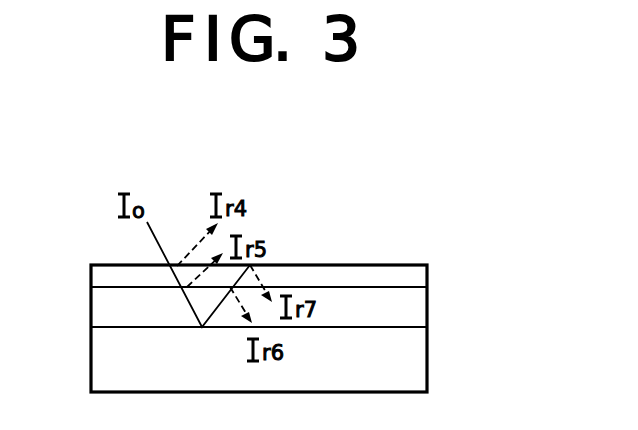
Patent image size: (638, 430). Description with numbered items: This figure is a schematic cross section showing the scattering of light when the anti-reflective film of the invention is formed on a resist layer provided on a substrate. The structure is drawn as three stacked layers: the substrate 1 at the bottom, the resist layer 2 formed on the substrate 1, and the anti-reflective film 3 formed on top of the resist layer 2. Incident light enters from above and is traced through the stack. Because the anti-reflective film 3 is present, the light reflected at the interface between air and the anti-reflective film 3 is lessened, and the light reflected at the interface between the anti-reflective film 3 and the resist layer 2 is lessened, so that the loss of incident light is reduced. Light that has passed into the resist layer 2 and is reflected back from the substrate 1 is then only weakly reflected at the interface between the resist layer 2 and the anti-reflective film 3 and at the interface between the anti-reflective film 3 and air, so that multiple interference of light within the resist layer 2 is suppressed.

The substrate 1 is at (415, 355).
The resist layer 2 is at (415, 303).
The anti-reflective film 3 is at (415, 273).